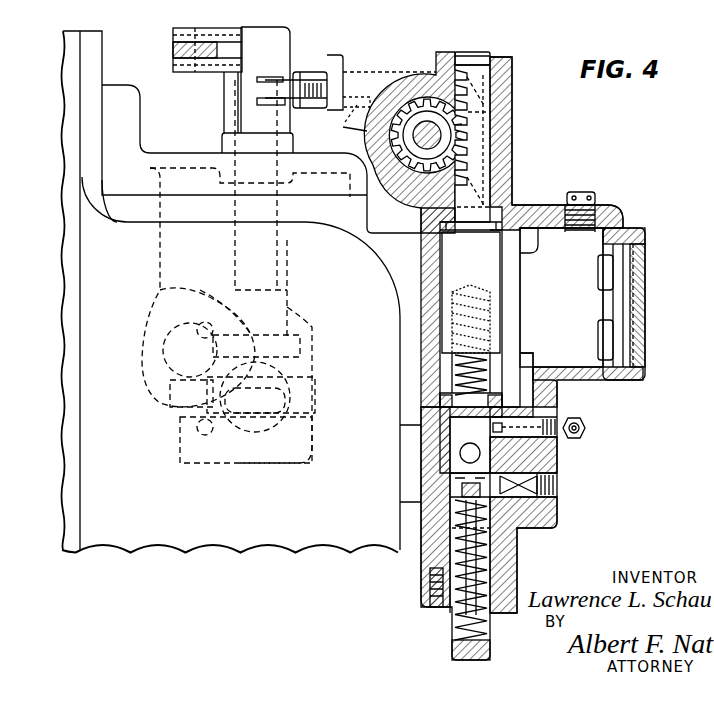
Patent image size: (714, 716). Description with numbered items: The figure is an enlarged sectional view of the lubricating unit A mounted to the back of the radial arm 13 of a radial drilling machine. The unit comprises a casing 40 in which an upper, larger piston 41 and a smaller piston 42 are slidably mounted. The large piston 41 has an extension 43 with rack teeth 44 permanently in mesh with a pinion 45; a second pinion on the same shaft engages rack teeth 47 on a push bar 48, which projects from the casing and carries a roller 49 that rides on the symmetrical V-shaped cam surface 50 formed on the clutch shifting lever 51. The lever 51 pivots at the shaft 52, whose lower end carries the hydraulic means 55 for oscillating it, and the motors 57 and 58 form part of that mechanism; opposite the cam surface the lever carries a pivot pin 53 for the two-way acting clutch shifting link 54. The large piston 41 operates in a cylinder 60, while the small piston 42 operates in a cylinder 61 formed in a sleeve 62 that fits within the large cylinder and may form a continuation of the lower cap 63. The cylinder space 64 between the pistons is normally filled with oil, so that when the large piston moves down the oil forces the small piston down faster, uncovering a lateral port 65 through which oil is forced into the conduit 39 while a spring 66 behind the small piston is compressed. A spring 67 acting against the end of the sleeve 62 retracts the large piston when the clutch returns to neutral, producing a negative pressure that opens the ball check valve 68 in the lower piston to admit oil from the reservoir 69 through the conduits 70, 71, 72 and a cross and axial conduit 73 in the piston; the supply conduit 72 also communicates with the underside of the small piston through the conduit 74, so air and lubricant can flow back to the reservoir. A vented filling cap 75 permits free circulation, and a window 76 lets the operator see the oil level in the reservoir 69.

The radial arm 13 is at (66, 347).
The conduit 39 is at (587, 430).
The casing 40 is at (553, 455).
The large piston 41 is at (450, 248).
The small piston 42 is at (421, 468).
The extension 43 is at (484, 178).
The rack teeth 44 is at (464, 153).
The pinion 45 is at (422, 99).
The rack teeth 47 is at (343, 128).
The push bar 48 is at (328, 72).
The roller 49 is at (330, 90).
The cam surface 50 is at (286, 92).
The clutch shifting lever 51 is at (228, 104).
The pivot shaft 52 is at (230, 123).
The pivot pin 53 is at (173, 38).
The clutch shifting link 54 is at (173, 50).
The hydraulic means 55 is at (300, 320).
The elevating clutch shifting motor 57 is at (167, 330).
The elevating clutch shifting motor 58 is at (287, 397).
The cylinder 60 is at (440, 367).
The cylinder 61 is at (421, 420).
The sleeve 62 is at (421, 433).
The lower cap 63 is at (425, 558).
The cylinder space 64 is at (445, 378).
The lateral port 65 is at (524, 419).
The spring 66 is at (480, 577).
The spring 67 is at (438, 388).
The ball check valve 68 is at (418, 448).
The reservoir 69 is at (561, 297).
The conduit 70 is at (528, 372).
The conduit 71 is at (517, 481).
The supply conduit 72 is at (556, 502).
The cross and axial conduit 73 is at (427, 487).
The conduit 74 is at (480, 556).
The vented filling cap 75 is at (596, 196).
The window 76 is at (638, 304).
The lubricating unit A is at (632, 222).